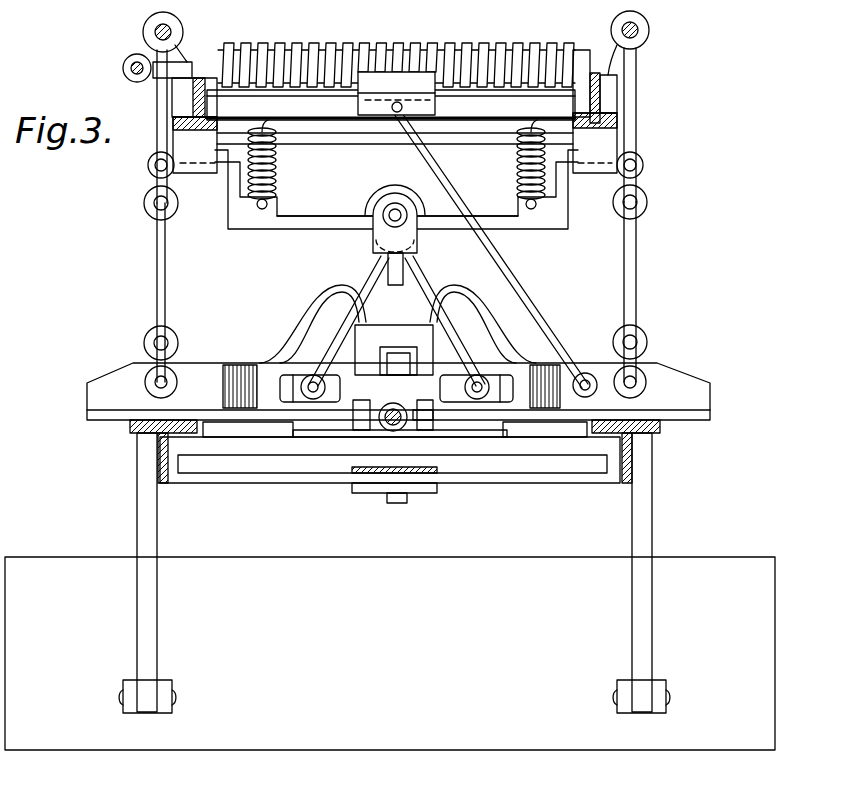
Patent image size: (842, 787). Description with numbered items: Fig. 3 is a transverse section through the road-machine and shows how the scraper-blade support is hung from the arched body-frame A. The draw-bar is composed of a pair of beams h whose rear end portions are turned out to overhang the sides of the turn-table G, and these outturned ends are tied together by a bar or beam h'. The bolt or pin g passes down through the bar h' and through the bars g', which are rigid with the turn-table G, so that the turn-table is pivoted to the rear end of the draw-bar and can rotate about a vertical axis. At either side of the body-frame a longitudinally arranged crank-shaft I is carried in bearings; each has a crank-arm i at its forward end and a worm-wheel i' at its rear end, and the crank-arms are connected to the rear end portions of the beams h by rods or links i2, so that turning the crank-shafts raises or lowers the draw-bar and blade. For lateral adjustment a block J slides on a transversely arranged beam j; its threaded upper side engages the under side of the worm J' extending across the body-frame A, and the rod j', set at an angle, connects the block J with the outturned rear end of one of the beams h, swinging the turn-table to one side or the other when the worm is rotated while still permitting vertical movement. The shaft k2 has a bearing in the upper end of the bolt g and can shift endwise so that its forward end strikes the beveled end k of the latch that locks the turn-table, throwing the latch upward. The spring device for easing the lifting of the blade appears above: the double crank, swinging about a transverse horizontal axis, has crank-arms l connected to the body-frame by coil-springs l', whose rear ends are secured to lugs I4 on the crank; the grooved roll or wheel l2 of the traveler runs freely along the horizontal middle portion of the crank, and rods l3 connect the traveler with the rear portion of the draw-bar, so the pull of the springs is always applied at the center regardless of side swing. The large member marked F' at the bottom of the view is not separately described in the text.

The base frame F' is at (390, 653).
The turn-table G is at (157, 450).
The beams h is at (398, 376).
The bar or beam h' is at (390, 485).
The bars g' is at (392, 496).
The bolt or pin g is at (394, 510).
The shaft k2 is at (380, 427).
The beveled end k is at (343, 360).
The rods l3 is at (343, 302).
The crank-arms l is at (383, 204).
The lugs I4 is at (320, 254).
The roll or wheel l2 is at (372, 190).
The coil-springs l' is at (396, 164).
The rod j' is at (495, 253).
The beam j is at (391, 72).
The worm J' is at (396, 43).
The block J is at (396, 57).
The body-frame A is at (600, 100).
The crank-shafts I is at (150, 34).
The crank-arm i is at (136, 126).
The worm-wheel i' is at (659, 125).
The rods or links i2 is at (157, 270).